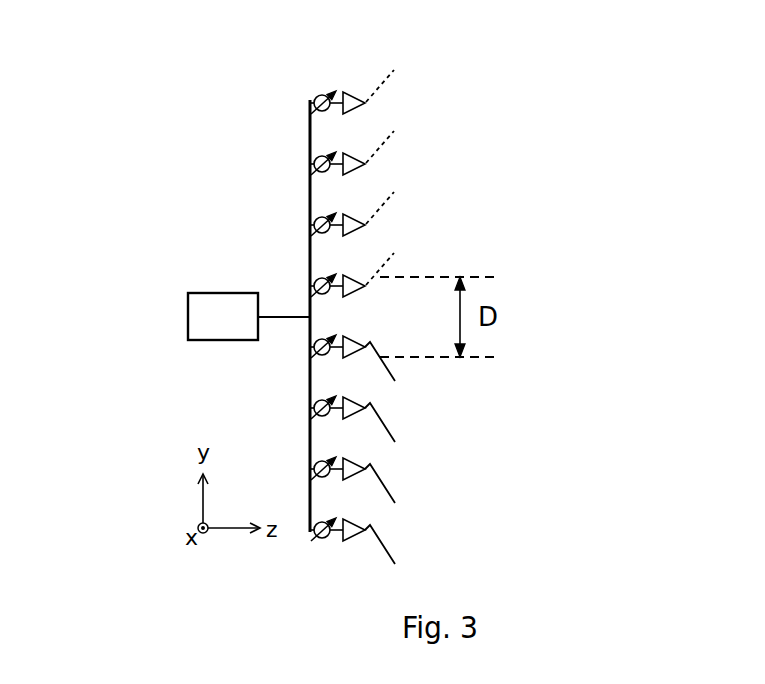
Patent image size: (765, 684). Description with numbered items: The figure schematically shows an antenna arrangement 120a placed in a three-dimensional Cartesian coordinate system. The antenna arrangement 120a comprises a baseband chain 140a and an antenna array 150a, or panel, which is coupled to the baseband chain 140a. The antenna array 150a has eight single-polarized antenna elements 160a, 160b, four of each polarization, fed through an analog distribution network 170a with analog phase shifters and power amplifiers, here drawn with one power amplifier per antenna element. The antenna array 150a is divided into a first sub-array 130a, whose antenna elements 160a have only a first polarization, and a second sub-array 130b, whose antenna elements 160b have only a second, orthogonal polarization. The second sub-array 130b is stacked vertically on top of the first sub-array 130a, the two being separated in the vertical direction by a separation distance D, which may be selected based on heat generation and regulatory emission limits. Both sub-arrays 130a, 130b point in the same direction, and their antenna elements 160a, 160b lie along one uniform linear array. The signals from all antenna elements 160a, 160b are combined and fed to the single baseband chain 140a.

The antenna arrangement 120a is at (165, 72).
The first sub-array 130a is at (500, 337).
The second sub-array 130b is at (498, 72).
The baseband chain 140a is at (212, 336).
The antenna array 150a is at (372, 66).
The antenna elements 160a is at (380, 546).
The antenna elements 160b is at (386, 81).
The analog distribution network 170a is at (365, 90).